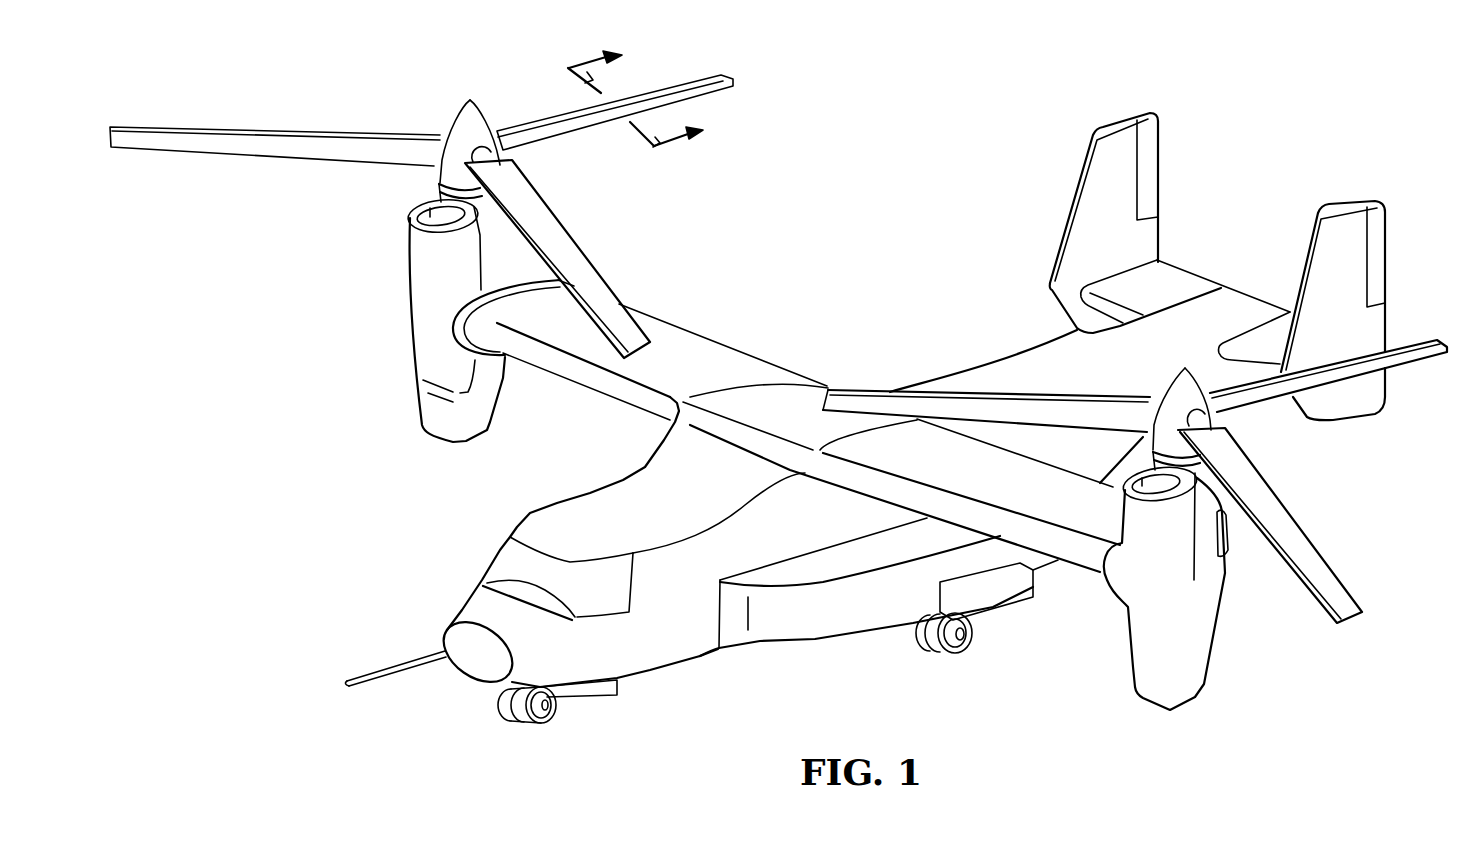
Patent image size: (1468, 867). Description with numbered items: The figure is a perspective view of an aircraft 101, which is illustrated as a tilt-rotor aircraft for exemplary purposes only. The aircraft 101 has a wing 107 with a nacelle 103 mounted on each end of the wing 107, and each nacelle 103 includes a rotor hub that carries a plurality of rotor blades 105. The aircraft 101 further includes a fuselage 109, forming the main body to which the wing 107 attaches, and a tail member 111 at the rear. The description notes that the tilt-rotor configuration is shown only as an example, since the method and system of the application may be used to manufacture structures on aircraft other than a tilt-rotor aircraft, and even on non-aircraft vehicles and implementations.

The aircraft 101 is at (923, 158).
The nacelle 103 is at (411, 272).
The rotor blades 105 is at (286, 132).
The wing 107 is at (714, 342).
The fuselage 109 is at (674, 664).
The tail member 111 is at (1016, 366).